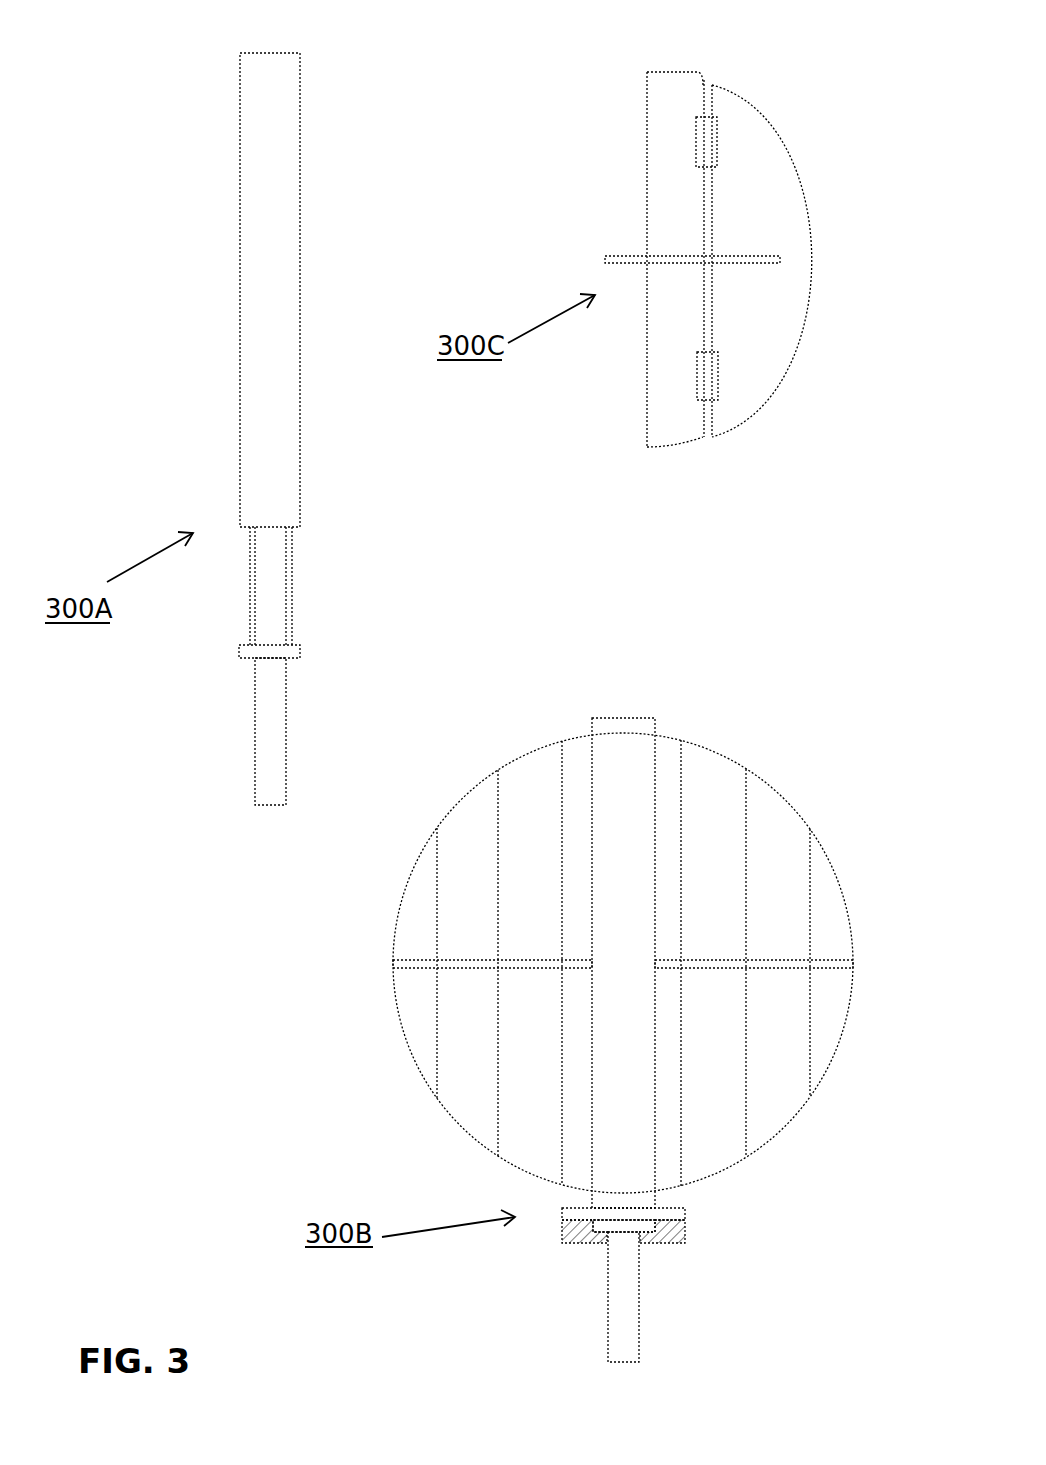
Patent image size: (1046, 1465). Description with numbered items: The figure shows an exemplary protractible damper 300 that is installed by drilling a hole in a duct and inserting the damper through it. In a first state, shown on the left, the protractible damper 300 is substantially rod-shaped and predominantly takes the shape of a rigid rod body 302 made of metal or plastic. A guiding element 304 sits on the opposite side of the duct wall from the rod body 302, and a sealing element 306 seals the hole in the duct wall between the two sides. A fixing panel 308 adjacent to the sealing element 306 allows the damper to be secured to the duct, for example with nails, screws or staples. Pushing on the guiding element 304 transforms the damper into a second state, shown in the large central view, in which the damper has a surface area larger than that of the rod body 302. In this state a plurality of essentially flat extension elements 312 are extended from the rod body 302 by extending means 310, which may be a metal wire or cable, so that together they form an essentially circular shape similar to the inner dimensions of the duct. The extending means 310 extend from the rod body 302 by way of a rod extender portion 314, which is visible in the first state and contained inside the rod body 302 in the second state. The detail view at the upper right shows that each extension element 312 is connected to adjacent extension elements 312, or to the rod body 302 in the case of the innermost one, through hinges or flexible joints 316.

The protractible damper 300 is at (143, 1159).
The rod body 302 is at (237, 175).
The guiding element 304 is at (253, 775).
The sealing element 306 is at (298, 658).
The fixing panel 308 is at (590, 1242).
The extending means 310 is at (755, 252).
The extension elements 312 is at (672, 95).
The rod extender portion 314 is at (287, 582).
The hinges or flexible joints 316 is at (694, 147).